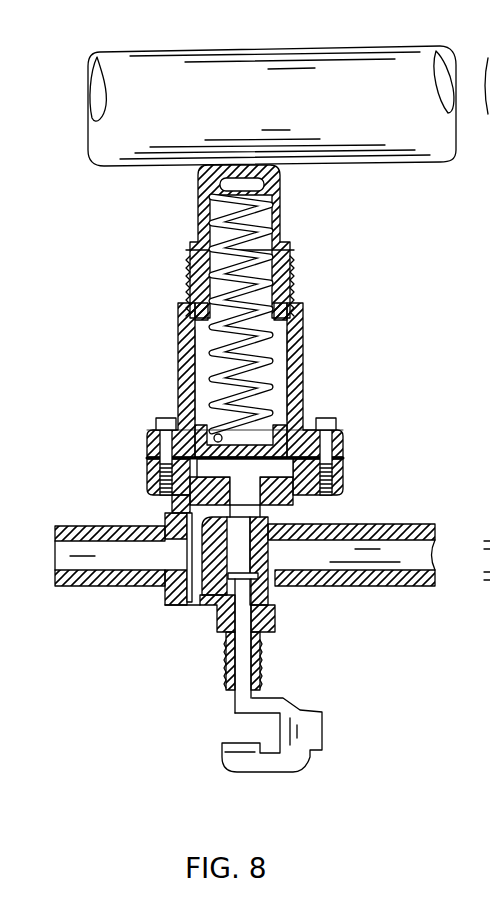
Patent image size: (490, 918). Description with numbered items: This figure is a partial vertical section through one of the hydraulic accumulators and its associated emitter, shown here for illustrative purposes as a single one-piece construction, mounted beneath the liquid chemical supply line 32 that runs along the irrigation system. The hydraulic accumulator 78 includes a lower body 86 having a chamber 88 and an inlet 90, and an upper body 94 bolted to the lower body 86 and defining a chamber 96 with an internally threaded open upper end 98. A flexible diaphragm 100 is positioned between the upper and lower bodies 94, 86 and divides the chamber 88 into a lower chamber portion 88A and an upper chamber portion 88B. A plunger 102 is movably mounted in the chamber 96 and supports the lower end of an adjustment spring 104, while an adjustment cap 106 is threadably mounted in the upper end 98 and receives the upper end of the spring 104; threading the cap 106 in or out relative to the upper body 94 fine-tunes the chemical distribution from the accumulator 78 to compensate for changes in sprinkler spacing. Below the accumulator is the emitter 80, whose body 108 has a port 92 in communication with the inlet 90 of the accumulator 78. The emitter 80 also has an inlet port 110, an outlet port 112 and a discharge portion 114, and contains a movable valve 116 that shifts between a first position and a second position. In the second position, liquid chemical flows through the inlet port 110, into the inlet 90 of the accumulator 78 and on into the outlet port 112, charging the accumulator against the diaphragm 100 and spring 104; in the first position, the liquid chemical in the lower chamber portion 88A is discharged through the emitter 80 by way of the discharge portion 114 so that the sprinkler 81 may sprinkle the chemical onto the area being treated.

The liquid chemical supply line 32 is at (380, 168).
The adjustment cap 106 is at (281, 218).
The internally threaded open upper end 98 is at (292, 302).
The upper body 94 is at (318, 307).
The hydraulic accumulator 78 is at (318, 332).
The chamber 96 is at (283, 356).
The plunger 102 is at (300, 392).
The chamber 88 is at (332, 442).
The adjustment spring 104 is at (213, 366).
The upper chamber portion 88B is at (196, 392).
The lower chamber portion 88A is at (190, 472).
The flexible diaphragm 100 is at (343, 455).
The lower body 86 is at (338, 473).
The inlet 90 is at (280, 498).
The port 92 is at (280, 515).
The inlet port 110 is at (145, 560).
The movable valve 116 is at (186, 562).
The outlet port 112 is at (312, 553).
The body 108 is at (203, 624).
The discharge portion 114 is at (247, 622).
The emitter valve 80 is at (286, 626).
The sprinkler 81 is at (300, 718).